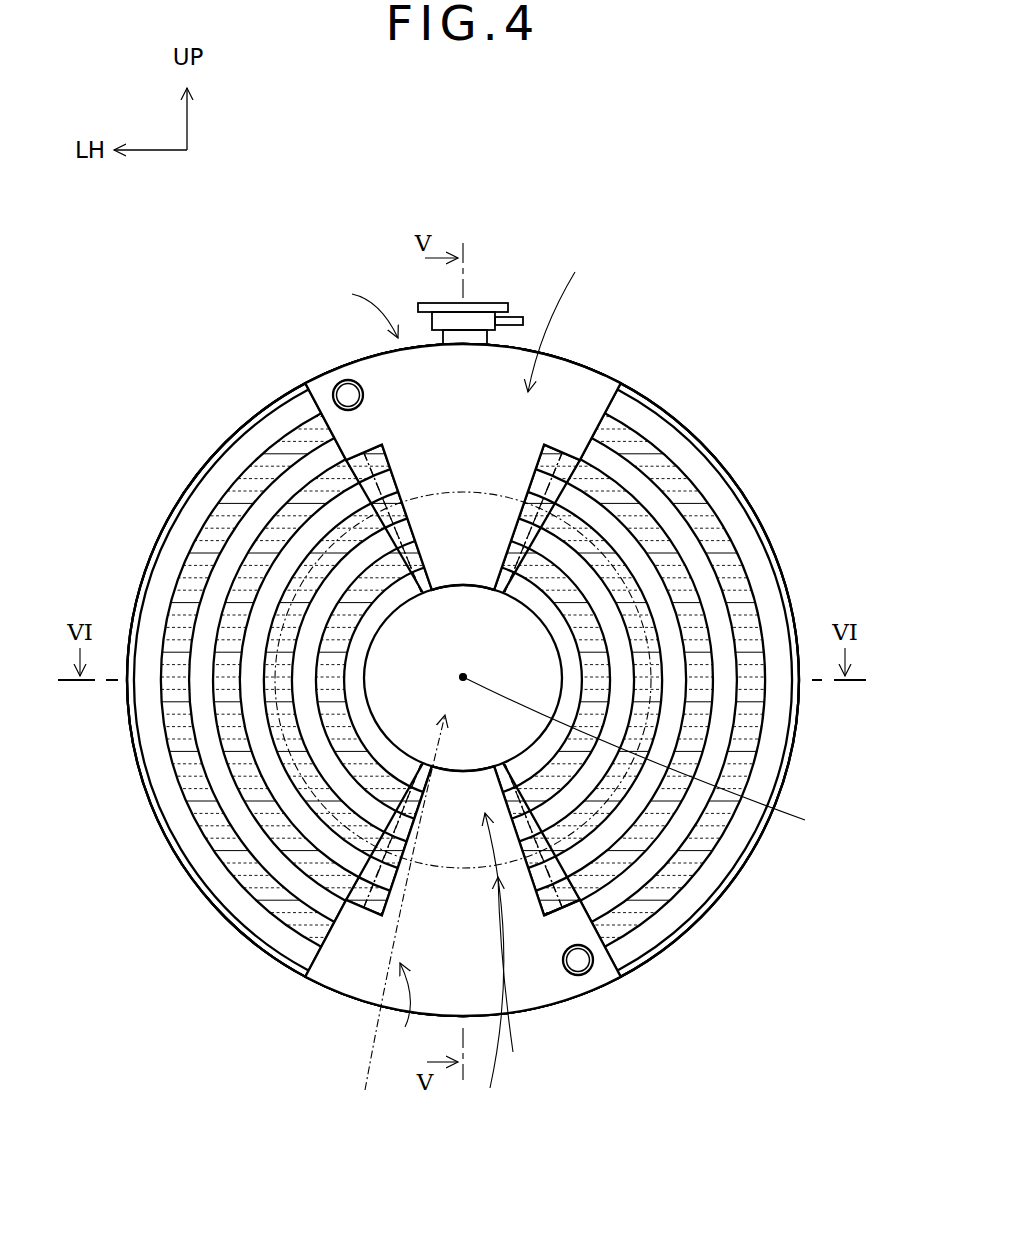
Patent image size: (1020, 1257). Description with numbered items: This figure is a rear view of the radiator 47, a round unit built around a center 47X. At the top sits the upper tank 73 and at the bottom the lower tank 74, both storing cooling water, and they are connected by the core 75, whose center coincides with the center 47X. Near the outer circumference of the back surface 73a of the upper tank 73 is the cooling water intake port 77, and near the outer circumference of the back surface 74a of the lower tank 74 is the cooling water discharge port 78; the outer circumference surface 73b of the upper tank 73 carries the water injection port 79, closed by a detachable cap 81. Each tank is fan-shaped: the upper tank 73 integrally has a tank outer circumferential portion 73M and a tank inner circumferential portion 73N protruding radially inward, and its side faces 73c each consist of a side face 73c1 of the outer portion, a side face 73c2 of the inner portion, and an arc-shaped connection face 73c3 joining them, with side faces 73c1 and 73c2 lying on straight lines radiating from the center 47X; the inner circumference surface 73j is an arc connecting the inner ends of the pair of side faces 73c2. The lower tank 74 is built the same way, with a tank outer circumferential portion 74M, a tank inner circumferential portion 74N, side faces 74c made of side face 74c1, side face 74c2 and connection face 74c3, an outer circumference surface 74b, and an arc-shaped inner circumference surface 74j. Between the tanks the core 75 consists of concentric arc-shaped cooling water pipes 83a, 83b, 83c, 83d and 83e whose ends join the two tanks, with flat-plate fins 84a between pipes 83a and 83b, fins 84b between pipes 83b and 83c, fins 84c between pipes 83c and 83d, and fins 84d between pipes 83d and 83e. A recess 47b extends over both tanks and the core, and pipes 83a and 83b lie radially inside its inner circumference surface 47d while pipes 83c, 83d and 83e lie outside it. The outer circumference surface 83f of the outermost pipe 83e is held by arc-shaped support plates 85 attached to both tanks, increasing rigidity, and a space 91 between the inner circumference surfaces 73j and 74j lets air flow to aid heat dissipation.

The radiator 47 is at (222, 302).
The center 47X is at (655, 757).
The recess 47b is at (512, 976).
The inner circumference surface 47d is at (402, 1006).
The upper tank 73 is at (427, 480).
The back surface 73a is at (565, 370).
The outer circumference surface 73b is at (548, 382).
The side face 73c is at (368, 478).
The side face 73c1 is at (378, 470).
The side face 73c2 is at (388, 565).
The connection face 73c3 is at (352, 470).
The inner circumference surface 73j is at (452, 591).
The tank outer circumferential portion 73M is at (562, 318).
The tank inner circumferential portion 73N is at (352, 303).
The lower tank 74 is at (358, 1000).
The back surface 74a is at (565, 995).
The outer circumference surface 74b is at (556, 950).
The side face 74c is at (368, 882).
The side face 74c1 is at (378, 890).
The side face 74c2 is at (388, 795).
The connection face 74c3 is at (352, 890).
The inner circumference surface 74j is at (473, 768).
The tank outer circumferential portion 74M is at (390, 913).
The tank inner circumferential portion 74N is at (492, 962).
The core 75 is at (188, 493).
The cooling water intake port 77 is at (340, 383).
The cooling water discharge port 78 is at (586, 978).
The water injection port 79 is at (442, 338).
The cap 81 is at (485, 305).
The cooling water pipe 83a is at (358, 693).
The cooling water pipe 83b is at (350, 790).
The cooling water pipe 83c is at (310, 830).
The cooling water pipe 83d is at (270, 860).
The cooling water pipe 83e is at (230, 900).
The outer circumference surface 83f is at (133, 690).
The fin 84a is at (405, 548).
The fin 84b is at (310, 577).
The fin 84c is at (245, 590).
The fin 84d is at (188, 603).
The support plate 85 is at (135, 722).
The space 91 is at (357, 997).